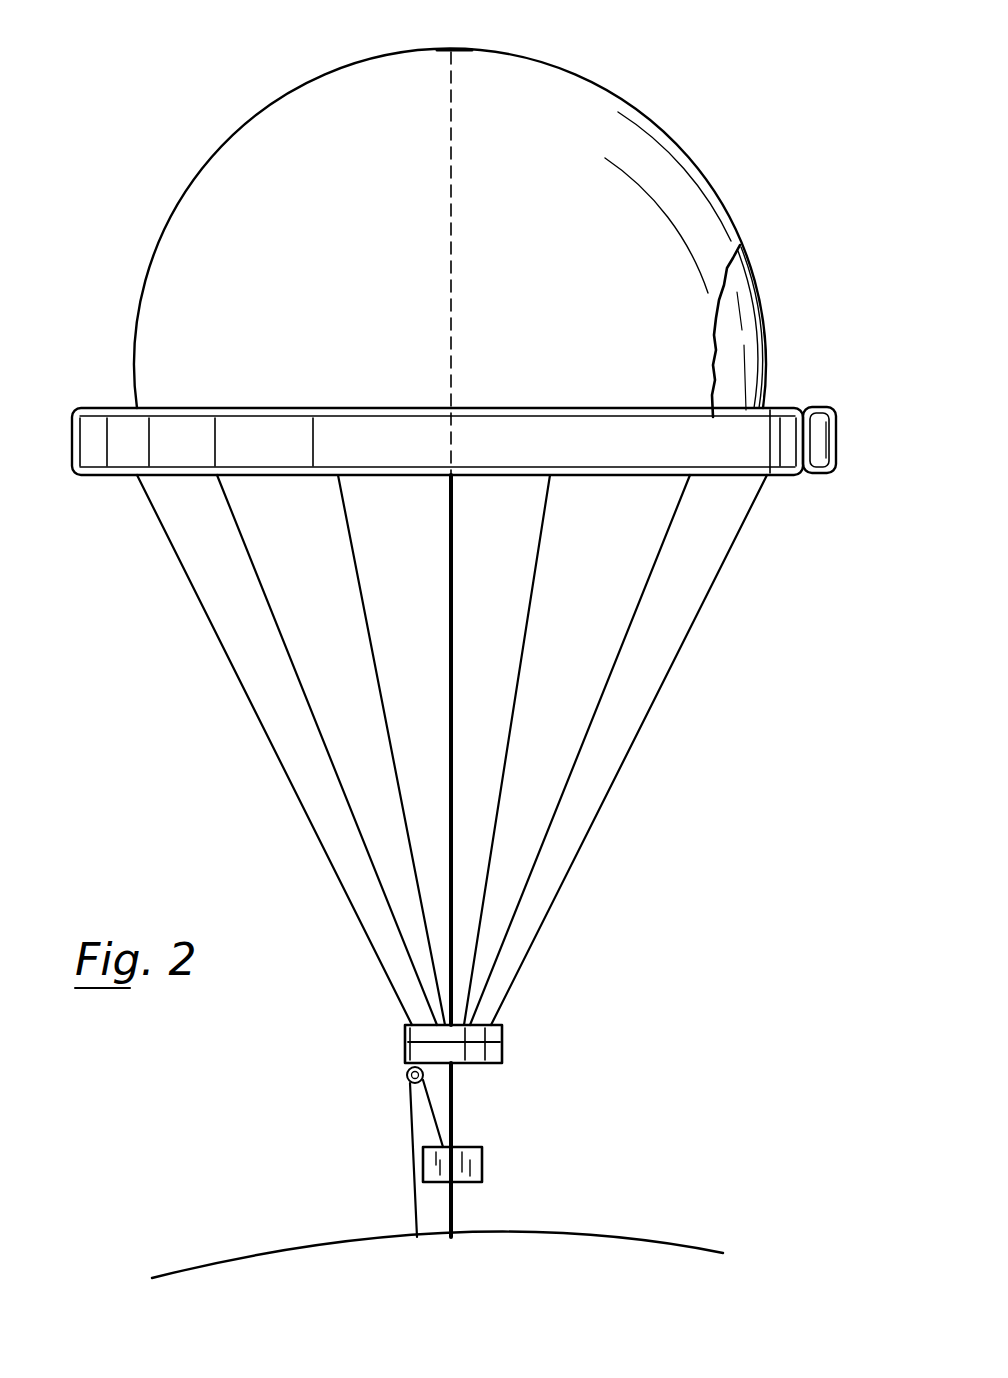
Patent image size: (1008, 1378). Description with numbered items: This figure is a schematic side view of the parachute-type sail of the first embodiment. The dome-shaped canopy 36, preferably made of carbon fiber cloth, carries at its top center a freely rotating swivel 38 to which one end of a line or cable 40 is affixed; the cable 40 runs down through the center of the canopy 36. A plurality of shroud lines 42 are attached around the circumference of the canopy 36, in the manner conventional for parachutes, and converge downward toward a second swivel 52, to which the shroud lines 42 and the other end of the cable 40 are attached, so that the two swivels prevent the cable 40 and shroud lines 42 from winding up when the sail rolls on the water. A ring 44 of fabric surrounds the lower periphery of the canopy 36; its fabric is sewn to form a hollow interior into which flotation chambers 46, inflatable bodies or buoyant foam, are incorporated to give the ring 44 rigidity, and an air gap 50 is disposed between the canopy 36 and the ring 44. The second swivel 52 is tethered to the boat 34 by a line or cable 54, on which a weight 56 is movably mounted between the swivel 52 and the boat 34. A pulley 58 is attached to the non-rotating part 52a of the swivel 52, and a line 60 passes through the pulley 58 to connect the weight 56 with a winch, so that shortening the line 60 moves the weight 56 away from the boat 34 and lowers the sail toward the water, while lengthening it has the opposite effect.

The boat 34 is at (641, 1240).
The canopy 36 is at (690, 218).
The swivel 38 is at (438, 50).
The line or cable 40 is at (453, 603).
The shroud lines 42 is at (325, 754).
The ring 44 is at (100, 420).
The flotation chambers 46 is at (822, 440).
The air gap 50 is at (778, 420).
The second swivel 52 is at (495, 1032).
The non-rotating part of the swivel 52a is at (505, 1055).
The line or cable 54 is at (455, 1110).
The weight 56 is at (477, 1167).
The pulley 58 is at (408, 1085).
The line 60 is at (407, 1120).